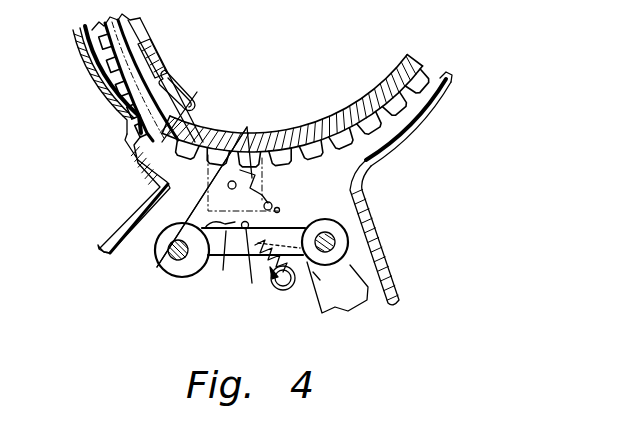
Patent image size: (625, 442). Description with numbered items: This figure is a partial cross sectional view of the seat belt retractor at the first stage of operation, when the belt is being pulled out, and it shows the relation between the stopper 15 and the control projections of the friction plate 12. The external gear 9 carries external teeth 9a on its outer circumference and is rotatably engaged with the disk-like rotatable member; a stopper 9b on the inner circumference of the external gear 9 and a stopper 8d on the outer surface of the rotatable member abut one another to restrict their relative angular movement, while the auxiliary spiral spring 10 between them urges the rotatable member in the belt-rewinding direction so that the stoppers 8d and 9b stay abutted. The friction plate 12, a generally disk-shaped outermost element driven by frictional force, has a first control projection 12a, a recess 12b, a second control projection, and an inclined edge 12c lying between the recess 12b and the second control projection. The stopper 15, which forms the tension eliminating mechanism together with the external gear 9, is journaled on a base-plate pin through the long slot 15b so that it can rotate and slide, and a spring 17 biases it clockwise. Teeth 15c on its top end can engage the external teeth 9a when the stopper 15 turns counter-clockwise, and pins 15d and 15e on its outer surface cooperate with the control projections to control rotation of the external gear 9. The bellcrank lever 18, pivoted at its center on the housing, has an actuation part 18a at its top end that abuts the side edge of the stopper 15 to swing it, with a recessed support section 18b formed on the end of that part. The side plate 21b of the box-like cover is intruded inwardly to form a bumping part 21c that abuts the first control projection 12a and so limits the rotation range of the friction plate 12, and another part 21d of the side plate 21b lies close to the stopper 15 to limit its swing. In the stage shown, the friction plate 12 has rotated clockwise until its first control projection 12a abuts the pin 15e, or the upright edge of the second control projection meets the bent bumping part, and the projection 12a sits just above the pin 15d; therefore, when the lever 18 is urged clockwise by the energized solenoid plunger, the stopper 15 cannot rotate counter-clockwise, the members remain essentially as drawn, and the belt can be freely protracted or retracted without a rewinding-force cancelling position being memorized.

The external gear 9 is at (291, 103).
The external teeth 9a is at (320, 133).
The stopper 9b is at (192, 102).
The stopper 8d is at (165, 68).
The auxiliary spiral spring 10 is at (144, 24).
The friction plate 12 is at (385, 128).
The first control projection 12a is at (280, 210).
The recess 12b is at (242, 226).
The inclined edge 12c is at (207, 158).
The stopper 15 is at (160, 282).
The long slot 15b is at (198, 276).
The teeth 15c is at (272, 205).
The pin 15d is at (271, 287).
The pin 15e is at (246, 132).
The spring 17 is at (324, 268).
The bellcrank lever 18 is at (366, 269).
The actuation part 18a is at (226, 270).
The recessed support section 18b is at (170, 256).
The side plate 21b is at (445, 95).
The bumping part 21c is at (128, 135).
The part of side plate 21d is at (140, 182).